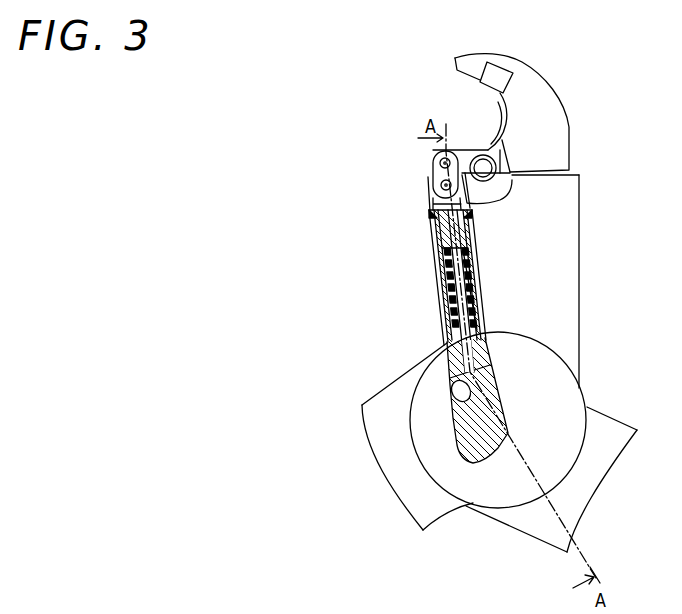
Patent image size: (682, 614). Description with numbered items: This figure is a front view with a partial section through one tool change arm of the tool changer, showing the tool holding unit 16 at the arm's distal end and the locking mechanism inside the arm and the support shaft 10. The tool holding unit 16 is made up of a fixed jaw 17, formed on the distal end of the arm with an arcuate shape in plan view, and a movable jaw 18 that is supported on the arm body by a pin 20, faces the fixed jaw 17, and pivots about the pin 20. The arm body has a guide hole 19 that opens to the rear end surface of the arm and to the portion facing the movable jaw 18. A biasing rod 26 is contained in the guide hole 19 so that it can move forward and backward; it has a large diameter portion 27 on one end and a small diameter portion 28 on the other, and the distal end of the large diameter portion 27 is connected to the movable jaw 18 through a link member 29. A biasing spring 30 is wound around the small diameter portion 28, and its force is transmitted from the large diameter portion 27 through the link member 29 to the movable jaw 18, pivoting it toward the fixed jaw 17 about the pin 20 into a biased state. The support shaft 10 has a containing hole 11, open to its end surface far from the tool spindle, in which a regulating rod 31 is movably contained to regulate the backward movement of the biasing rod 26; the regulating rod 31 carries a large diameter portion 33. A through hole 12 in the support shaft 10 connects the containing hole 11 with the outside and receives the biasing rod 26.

The support shaft 10 is at (570, 400).
The containing hole 11 is at (462, 399).
The through hole 12 is at (455, 343).
The tool holding unit 16 is at (457, 92).
The fixed jaw 17 is at (555, 123).
The movable jaw 18 is at (437, 147).
The guide hole 19 is at (443, 230).
The pin 20 is at (484, 166).
The biasing rod 26 is at (509, 275).
The large diameter portion 27 is at (464, 226).
The small diameter portion 28 is at (447, 273).
The link member 29 is at (428, 180).
The biasing spring 30 is at (472, 283).
The regulating rod 31 is at (396, 408).
The large diameter portion 33 is at (462, 432).